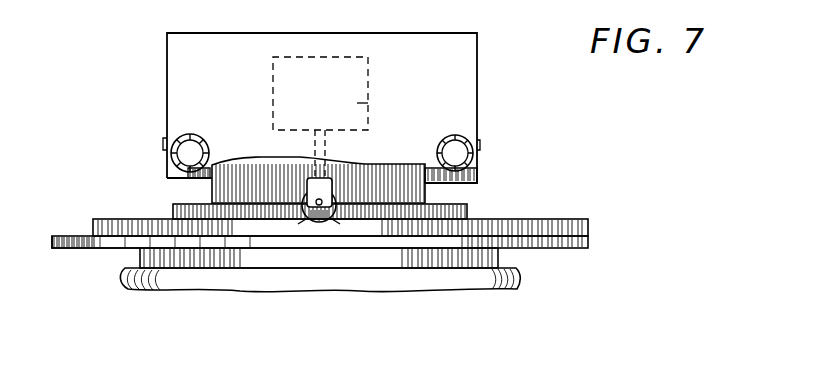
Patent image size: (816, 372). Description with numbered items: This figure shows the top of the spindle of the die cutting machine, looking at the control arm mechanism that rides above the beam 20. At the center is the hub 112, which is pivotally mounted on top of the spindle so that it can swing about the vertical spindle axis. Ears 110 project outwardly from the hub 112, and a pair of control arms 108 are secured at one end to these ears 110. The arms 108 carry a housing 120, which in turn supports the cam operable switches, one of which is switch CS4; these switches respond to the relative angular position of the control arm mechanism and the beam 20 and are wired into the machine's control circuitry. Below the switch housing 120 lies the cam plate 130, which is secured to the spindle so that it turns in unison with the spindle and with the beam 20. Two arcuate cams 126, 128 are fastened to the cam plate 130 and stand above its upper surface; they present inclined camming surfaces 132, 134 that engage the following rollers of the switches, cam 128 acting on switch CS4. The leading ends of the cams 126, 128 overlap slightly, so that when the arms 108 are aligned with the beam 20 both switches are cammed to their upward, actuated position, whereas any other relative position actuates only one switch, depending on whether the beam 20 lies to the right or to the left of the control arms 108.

The housing 120 is at (410, 45).
The cam operable switch CS4 is at (323, 170).
The hub 112 is at (263, 172).
The arms 108 is at (462, 134).
The ears 110 is at (480, 177).
The arcuate cam 126 is at (160, 222).
The arcuate cam 128 is at (545, 222).
The cam plate 130 is at (84, 249).
The beam 20 is at (518, 276).
The inclined camming surface 134 is at (303, 222).
The inclined camming surface 132 is at (333, 222).